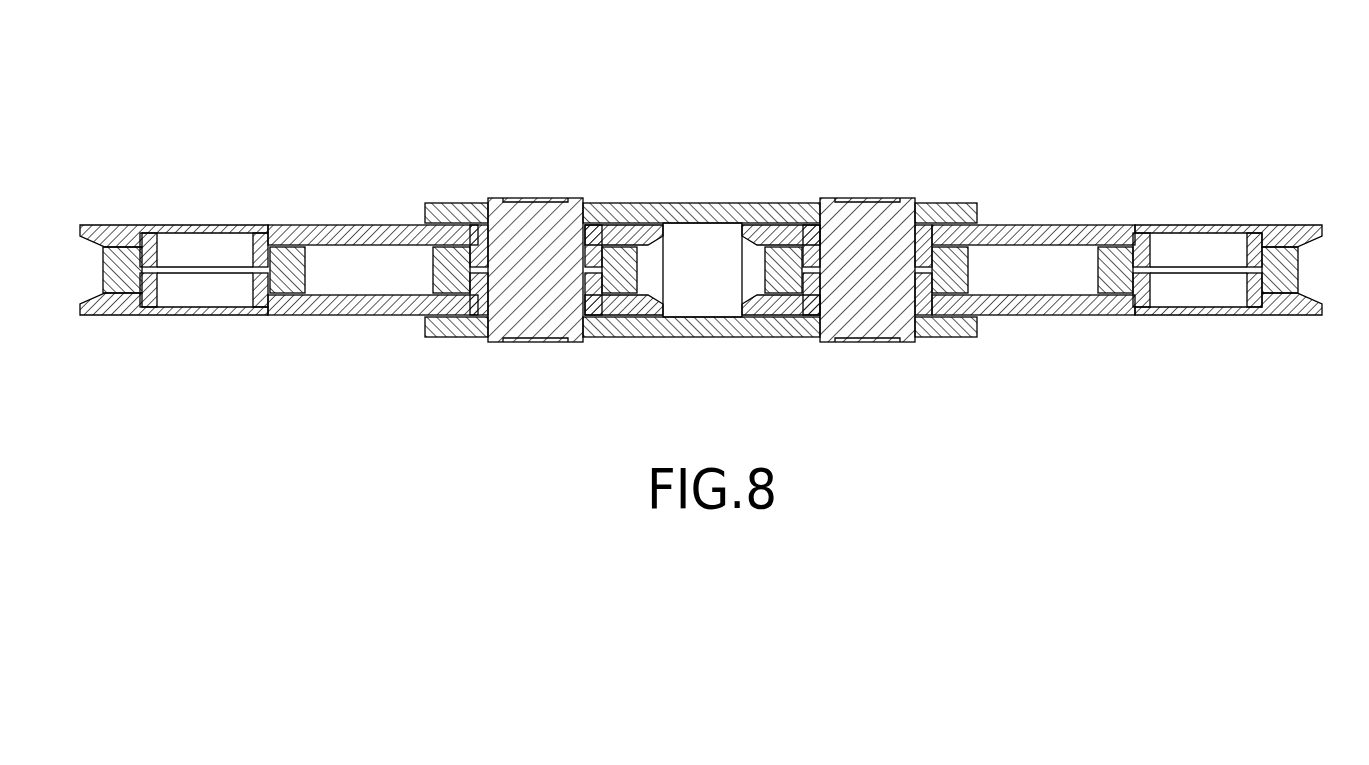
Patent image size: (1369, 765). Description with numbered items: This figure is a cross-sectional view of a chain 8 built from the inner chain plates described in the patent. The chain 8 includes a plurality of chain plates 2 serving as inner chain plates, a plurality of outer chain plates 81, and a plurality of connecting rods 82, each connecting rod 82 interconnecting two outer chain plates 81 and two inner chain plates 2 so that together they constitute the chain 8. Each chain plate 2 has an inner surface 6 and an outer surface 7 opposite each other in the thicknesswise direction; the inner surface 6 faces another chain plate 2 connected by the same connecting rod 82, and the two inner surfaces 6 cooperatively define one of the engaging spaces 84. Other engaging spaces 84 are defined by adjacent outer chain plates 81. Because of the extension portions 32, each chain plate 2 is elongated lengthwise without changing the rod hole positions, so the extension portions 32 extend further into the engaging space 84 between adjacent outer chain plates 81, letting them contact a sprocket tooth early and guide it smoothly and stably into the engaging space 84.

The chain plate 2 is at (358, 210).
The inner surface 6 is at (332, 258).
The outer surface 7 is at (387, 223).
The chain 8 is at (779, 271).
The extension portion 32 is at (767, 228).
The outer chain plate 81 is at (930, 213).
The connecting rod 82 is at (530, 318).
The engaging space 84 is at (418, 258).